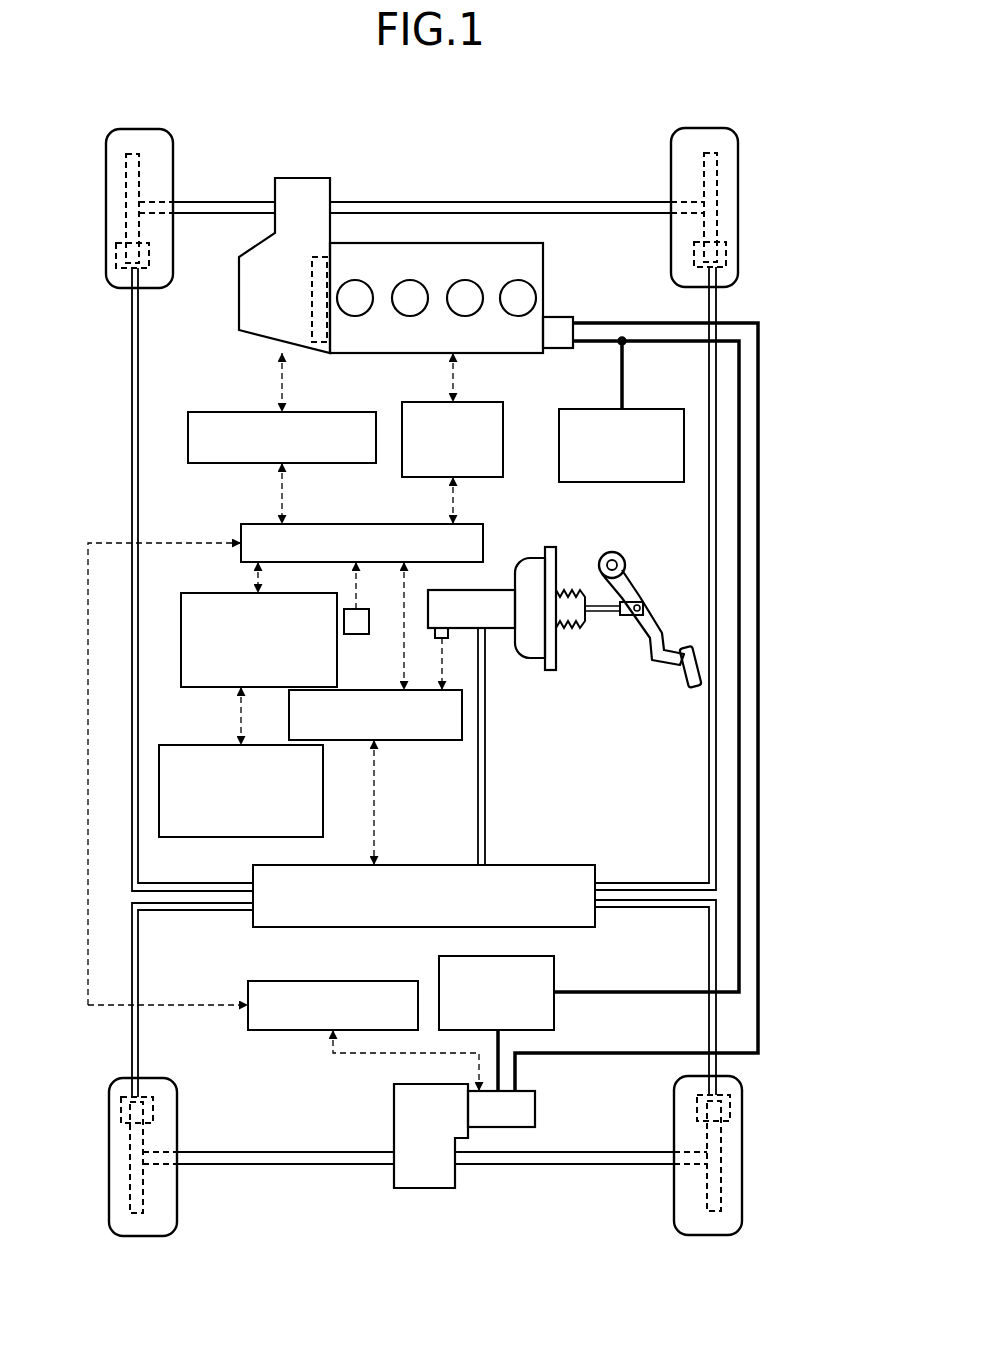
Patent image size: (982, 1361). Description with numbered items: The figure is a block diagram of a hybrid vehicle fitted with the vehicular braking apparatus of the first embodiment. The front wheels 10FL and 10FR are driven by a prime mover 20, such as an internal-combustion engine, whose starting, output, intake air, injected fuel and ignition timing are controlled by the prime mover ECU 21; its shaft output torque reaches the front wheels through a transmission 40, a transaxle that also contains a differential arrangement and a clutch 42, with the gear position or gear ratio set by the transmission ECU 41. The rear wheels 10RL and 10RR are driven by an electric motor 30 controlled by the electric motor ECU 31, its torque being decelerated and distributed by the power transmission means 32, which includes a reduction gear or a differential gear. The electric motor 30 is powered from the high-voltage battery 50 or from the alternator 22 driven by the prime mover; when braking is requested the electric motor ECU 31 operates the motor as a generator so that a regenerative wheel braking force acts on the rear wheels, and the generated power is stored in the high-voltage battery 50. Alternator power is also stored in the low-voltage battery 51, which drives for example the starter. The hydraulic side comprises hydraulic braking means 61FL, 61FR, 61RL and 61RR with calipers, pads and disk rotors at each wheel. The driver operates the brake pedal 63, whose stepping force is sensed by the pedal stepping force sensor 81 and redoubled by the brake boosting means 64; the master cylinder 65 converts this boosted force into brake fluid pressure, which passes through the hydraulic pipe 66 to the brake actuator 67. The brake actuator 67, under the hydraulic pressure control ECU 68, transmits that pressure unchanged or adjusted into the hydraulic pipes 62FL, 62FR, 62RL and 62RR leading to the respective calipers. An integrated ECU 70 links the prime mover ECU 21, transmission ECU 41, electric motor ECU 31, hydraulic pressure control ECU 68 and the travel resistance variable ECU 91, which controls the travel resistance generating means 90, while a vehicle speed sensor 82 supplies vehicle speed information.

The front left wheel 10FL is at (140, 129).
The front right wheel 10FR is at (700, 128).
The rear left wheel 10RL is at (146, 1237).
The rear right wheel 10RR is at (705, 1237).
The hydraulic braking means 61FL is at (116, 255).
The hydraulic braking means 61FR is at (726, 255).
The hydraulic braking means 61RL is at (121, 1110).
The hydraulic braking means 61RR is at (730, 1108).
The prime mover 20 is at (543, 270).
The prime mover ECU 21 is at (478, 402).
The alternator 22 is at (562, 350).
The electric motor 30 is at (535, 1108).
The electric motor ECU 31 is at (360, 981).
The power transmission means 32 is at (394, 1130).
The transmission 40 is at (239, 318).
The transmission ECU 41 is at (250, 412).
The clutch 42 is at (320, 355).
The high-voltage battery 50 is at (554, 978).
The low-voltage battery 51 is at (648, 409).
The hydraulic pipe 62FL is at (215, 868).
The hydraulic pipe 62FR is at (635, 883).
The hydraulic pipe 62RL is at (210, 910).
The hydraulic pipe 62RR is at (635, 907).
The brake pedal 63 is at (660, 635).
The brake boosting means 64 is at (530, 658).
The master cylinder 65 is at (489, 628).
The hydraulic pipe 66 is at (485, 735).
The brake actuator 67 is at (520, 865).
The hydraulic pressure control ECU 68 is at (420, 740).
The integrated ECU 70 is at (358, 524).
The pedal stepping force sensor 81 is at (448, 638).
The vehicle speed sensor 82 is at (353, 634).
The travel resistance generating means 90 is at (210, 745).
The travel resistance variable ECU 91 is at (218, 593).